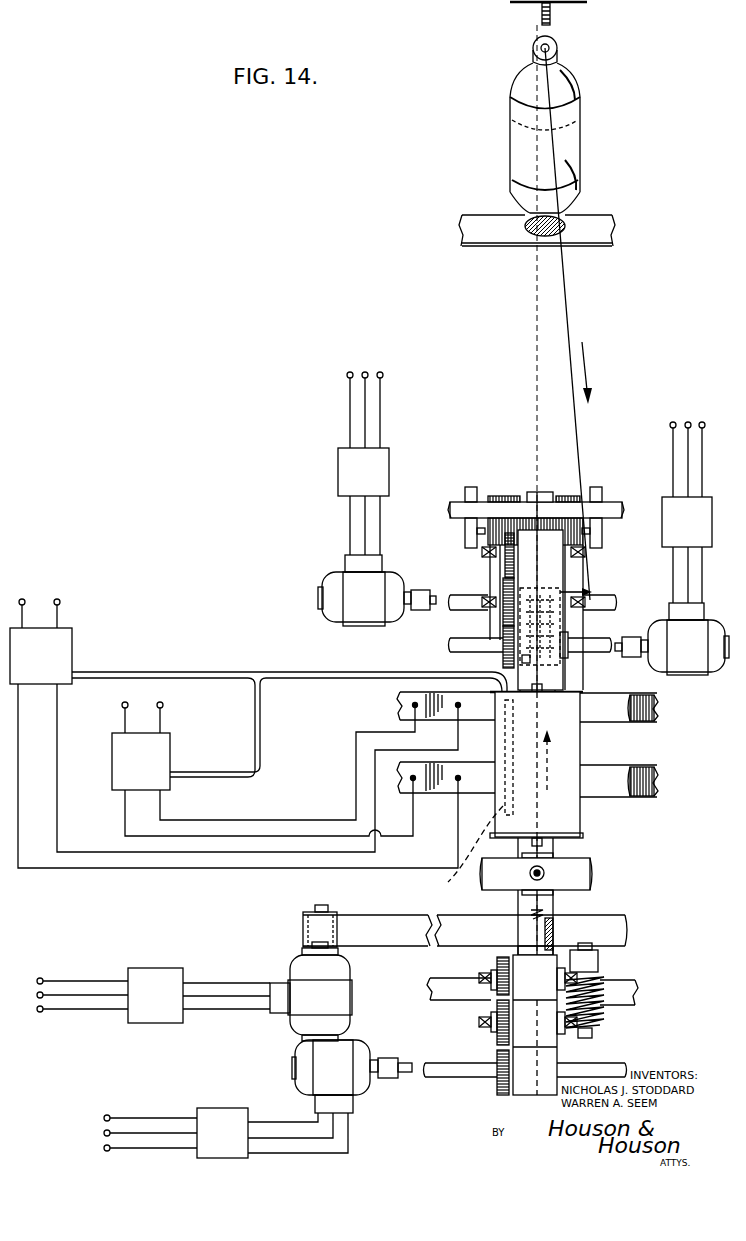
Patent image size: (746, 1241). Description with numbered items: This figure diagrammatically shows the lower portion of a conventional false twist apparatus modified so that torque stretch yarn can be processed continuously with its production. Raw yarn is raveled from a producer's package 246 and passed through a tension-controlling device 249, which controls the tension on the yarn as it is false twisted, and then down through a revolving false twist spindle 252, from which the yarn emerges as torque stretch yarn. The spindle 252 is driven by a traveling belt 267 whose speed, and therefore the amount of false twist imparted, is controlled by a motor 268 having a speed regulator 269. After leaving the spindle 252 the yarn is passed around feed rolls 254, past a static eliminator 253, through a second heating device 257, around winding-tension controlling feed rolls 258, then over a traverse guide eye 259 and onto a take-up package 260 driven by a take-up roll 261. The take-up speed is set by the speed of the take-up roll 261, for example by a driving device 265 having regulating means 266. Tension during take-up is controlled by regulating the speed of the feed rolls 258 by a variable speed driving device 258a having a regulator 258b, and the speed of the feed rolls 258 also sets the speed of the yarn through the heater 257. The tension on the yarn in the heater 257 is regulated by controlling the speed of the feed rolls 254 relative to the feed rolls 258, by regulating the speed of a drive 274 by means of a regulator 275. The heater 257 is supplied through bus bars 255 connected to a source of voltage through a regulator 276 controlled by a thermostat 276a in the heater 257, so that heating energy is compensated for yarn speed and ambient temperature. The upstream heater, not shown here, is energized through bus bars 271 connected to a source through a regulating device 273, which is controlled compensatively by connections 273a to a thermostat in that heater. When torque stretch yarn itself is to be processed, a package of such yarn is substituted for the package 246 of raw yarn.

The producer's package 246 is at (582, 142).
The tension-controlling device 249 is at (563, 632).
The false twist spindle 252 is at (528, 934).
The static eliminator 253 is at (592, 872).
The feed rolls 254 is at (527, 1087).
The bus bars 255 is at (613, 707).
The second heating device 257 is at (573, 823).
The winding-tension controlling feed rolls 258 is at (552, 661).
The variable speed driving device 258a is at (695, 660).
The regulator 258b is at (663, 541).
The traverse guide eye 259 is at (546, 492).
The take-up package 260 is at (506, 497).
The take-up roll 261 is at (500, 578).
The driving device 265 is at (389, 574).
The regulating means 266 is at (390, 477).
The traveling belt 267 is at (437, 946).
The motor 268 is at (353, 1005).
The speed regulator 269 is at (186, 967).
The bus bars 271 is at (652, 721).
The regulating device 273 is at (170, 760).
The connections 273a is at (263, 724).
The drive 274 is at (368, 1054).
The regulator 275 is at (211, 1108).
The regulator 276 is at (72, 655).
The thermostat 276a is at (449, 853).